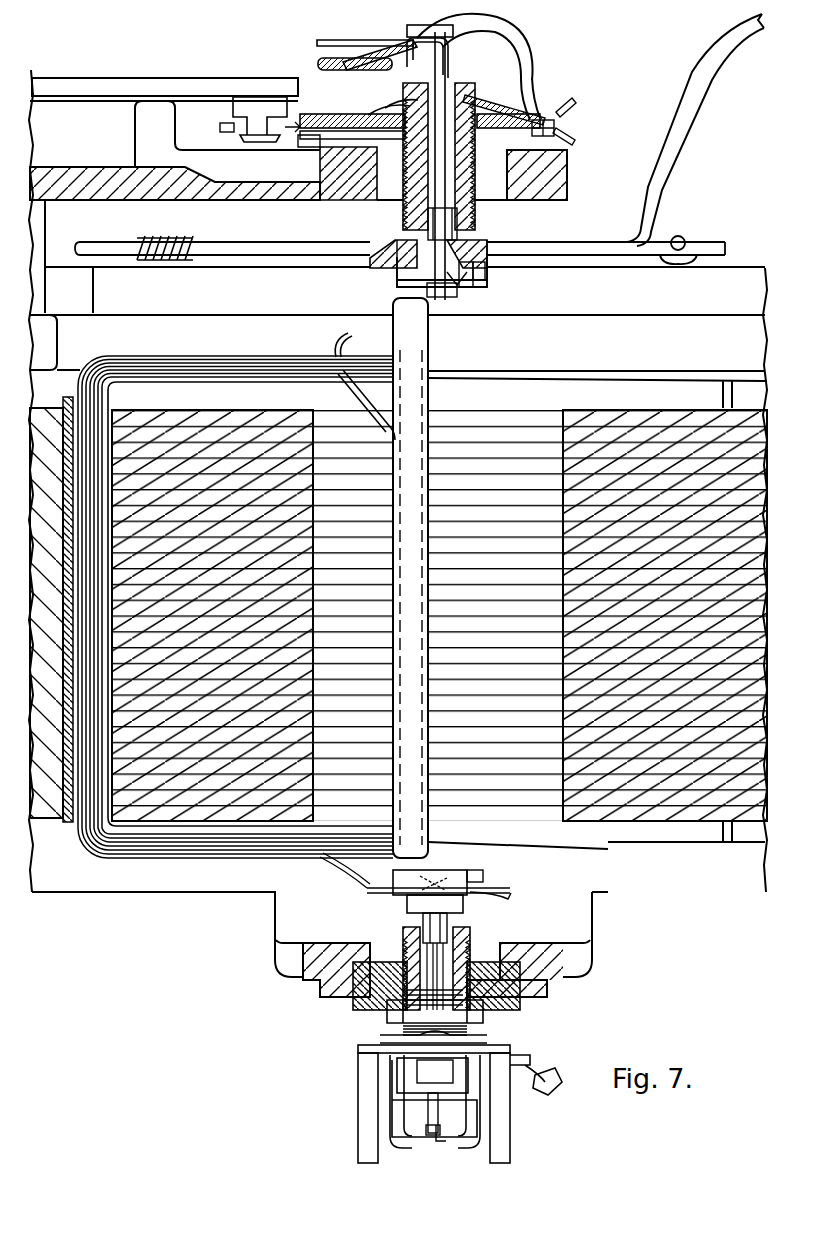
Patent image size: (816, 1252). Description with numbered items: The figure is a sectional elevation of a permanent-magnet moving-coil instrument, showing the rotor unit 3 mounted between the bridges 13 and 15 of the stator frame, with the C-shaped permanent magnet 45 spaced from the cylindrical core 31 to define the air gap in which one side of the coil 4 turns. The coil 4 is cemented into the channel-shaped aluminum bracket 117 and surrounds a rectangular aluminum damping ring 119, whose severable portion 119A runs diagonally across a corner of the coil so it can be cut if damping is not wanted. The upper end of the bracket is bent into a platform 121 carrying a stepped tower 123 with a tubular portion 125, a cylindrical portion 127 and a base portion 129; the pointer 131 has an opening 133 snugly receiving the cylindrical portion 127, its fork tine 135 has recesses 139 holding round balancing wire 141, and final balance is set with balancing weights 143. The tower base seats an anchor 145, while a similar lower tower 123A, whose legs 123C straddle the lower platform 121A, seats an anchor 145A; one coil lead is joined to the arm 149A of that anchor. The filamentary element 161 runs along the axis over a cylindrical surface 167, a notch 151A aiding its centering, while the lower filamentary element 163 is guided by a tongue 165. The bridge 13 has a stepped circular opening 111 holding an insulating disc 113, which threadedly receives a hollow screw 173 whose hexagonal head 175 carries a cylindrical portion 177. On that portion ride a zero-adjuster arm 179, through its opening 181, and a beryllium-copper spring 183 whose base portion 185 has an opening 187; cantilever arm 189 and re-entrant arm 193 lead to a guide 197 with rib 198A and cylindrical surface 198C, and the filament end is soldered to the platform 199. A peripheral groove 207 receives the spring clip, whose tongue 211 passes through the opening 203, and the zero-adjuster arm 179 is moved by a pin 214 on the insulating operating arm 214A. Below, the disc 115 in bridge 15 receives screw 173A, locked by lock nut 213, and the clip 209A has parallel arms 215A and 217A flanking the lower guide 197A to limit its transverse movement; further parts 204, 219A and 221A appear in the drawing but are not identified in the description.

The rotor unit 3 is at (130, 850).
The coil 4 is at (236, 361).
The bridge 13 is at (567, 177).
The bridge 15 is at (548, 990).
The cylindrical core 31 is at (232, 808).
The permanent magnet 45 is at (48, 818).
The circular opening 111 is at (382, 200).
The disc 113 is at (405, 204).
The disc 115 is at (396, 952).
The bracket 117 is at (429, 343).
The damping ring 119 is at (190, 360).
The severable portion 119A is at (370, 395).
The platform 121 is at (464, 287).
The platform 121A is at (480, 870).
The tower 123 is at (487, 281).
The tower 123A is at (466, 905).
The legs 123C is at (452, 874).
The tubular portion 125 is at (460, 224).
The cylindrical portion 127 is at (470, 247).
The cylindrical base portion 129 is at (397, 272).
The pointer 131 is at (692, 78).
The opening 133 is at (410, 243).
The tine 135 is at (727, 248).
The recesses 139 is at (692, 247).
The round wire 141 is at (680, 236).
The balancing weights 143 is at (188, 244).
The anchor 145 is at (485, 270).
The anchor 145A is at (485, 879).
The arm 149A is at (388, 886).
The notch 151A is at (502, 893).
The filamentary element 161 is at (441, 72).
The filamentary element 163 is at (433, 1136).
The tongue 165 is at (456, 298).
The cylindrical surface 167 is at (452, 285).
The hollow screw 173 is at (472, 190).
The screw 173A is at (400, 1037).
The hexagonal head 175 is at (375, 141).
The cylindrical portion 177 is at (405, 103).
The zero-adjuster arm 179 is at (236, 128).
The opening 181 is at (368, 117).
The spring 183 is at (532, 52).
The base portion 185 is at (303, 146).
The opening 187 is at (375, 111).
The arm 189 is at (522, 30).
The arm 193 is at (317, 65).
The guide 197 is at (415, 62).
The guide 197A is at (441, 1141).
The rib 198A is at (420, 27).
The cylindrical surface 198C is at (443, 40).
The platform 199 is at (372, 46).
The opening 203 is at (566, 110).
The terminal strip 204 is at (530, 107).
The peripheral groove 207 is at (512, 95).
The clip 209A is at (505, 1049).
The tongue 211 is at (554, 125).
The lock nut 213 is at (390, 1012).
The pin 214 is at (245, 115).
The operating arm 214A is at (202, 78).
The arm 215A is at (389, 1092).
The arm 217A is at (480, 1097).
The left contact leg 219A is at (400, 1148).
The right contact leg 221A is at (468, 1148).